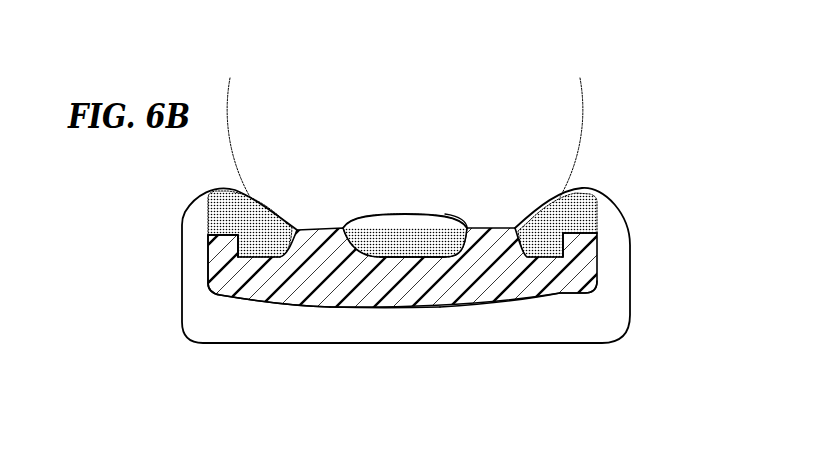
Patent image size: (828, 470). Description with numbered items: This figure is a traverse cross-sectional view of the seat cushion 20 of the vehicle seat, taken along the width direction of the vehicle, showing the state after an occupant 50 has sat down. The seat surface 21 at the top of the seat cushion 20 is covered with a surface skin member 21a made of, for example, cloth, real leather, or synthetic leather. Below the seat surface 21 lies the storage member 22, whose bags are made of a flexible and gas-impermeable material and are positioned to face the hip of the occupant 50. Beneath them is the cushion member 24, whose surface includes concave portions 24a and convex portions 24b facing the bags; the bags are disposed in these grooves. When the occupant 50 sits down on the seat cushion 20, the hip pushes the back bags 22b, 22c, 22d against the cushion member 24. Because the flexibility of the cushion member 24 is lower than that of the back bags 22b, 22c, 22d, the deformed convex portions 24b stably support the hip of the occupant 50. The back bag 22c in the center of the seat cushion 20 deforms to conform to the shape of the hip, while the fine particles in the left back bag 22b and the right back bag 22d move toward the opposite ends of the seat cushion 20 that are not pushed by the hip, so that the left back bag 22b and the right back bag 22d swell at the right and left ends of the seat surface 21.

The seat cushion 20 is at (632, 281).
The seat surface 21 is at (438, 216).
The surface skin member 21a is at (462, 226).
The storage member 22 is at (594, 409).
The left back bag 22b is at (247, 238).
The back bag 22c is at (405, 235).
The right back bag 22d is at (557, 257).
The cushion member 24 is at (235, 269).
The concave portions 24a is at (227, 257).
The convex portions 24b is at (320, 223).
The occupant 50 is at (580, 76).